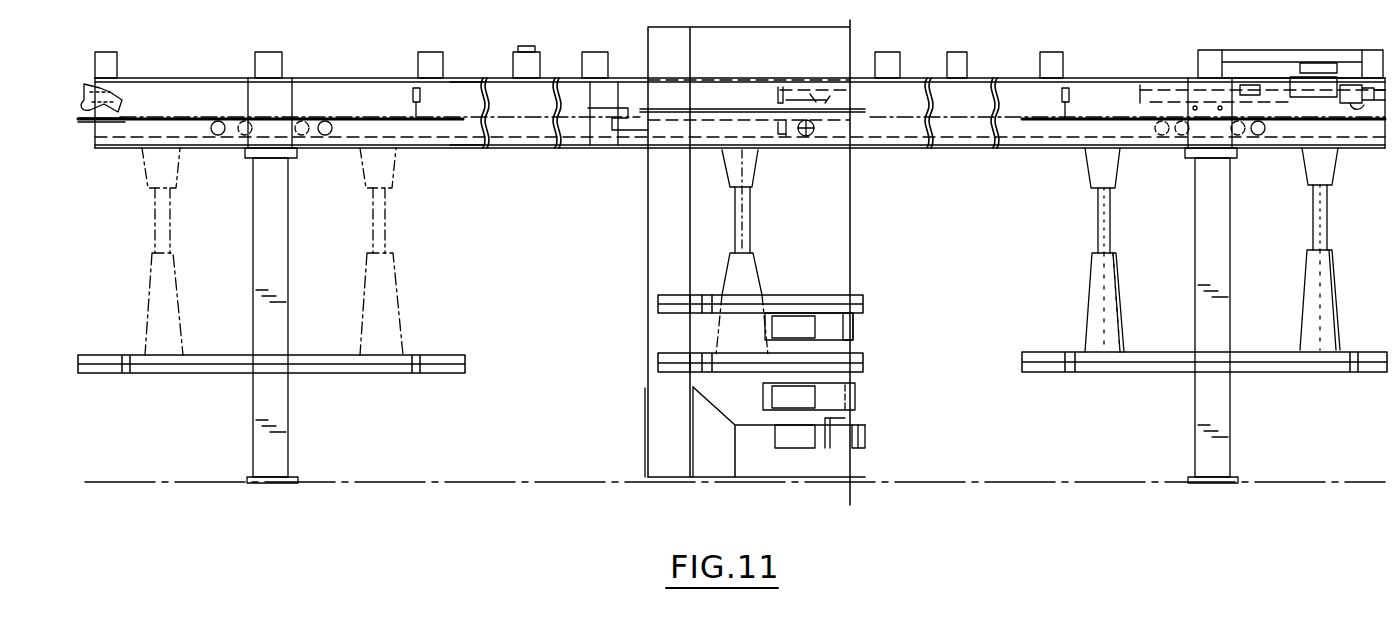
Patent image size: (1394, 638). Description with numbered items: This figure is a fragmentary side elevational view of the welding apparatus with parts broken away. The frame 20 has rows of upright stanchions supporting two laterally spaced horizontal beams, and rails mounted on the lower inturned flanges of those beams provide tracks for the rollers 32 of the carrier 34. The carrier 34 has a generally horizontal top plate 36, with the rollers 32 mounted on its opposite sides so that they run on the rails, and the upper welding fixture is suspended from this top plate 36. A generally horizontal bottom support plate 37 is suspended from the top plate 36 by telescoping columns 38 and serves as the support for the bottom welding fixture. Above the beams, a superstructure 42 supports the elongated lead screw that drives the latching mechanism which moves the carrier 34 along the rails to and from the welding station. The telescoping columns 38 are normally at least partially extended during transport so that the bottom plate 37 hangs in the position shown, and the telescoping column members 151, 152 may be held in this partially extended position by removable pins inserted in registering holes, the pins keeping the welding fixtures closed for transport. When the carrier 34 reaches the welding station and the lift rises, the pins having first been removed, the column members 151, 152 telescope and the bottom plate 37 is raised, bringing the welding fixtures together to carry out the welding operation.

The frame 20 is at (169, 63).
The rollers 32 is at (218, 138).
The carrier 34 is at (395, 272).
The top plate 36 is at (330, 118).
The bottom support plate 37 is at (463, 374).
The telescoping columns 38 is at (148, 283).
The superstructure 42 is at (460, 86).
The telescoping column member 151 is at (1098, 203).
The telescoping column member 152 is at (1090, 314).